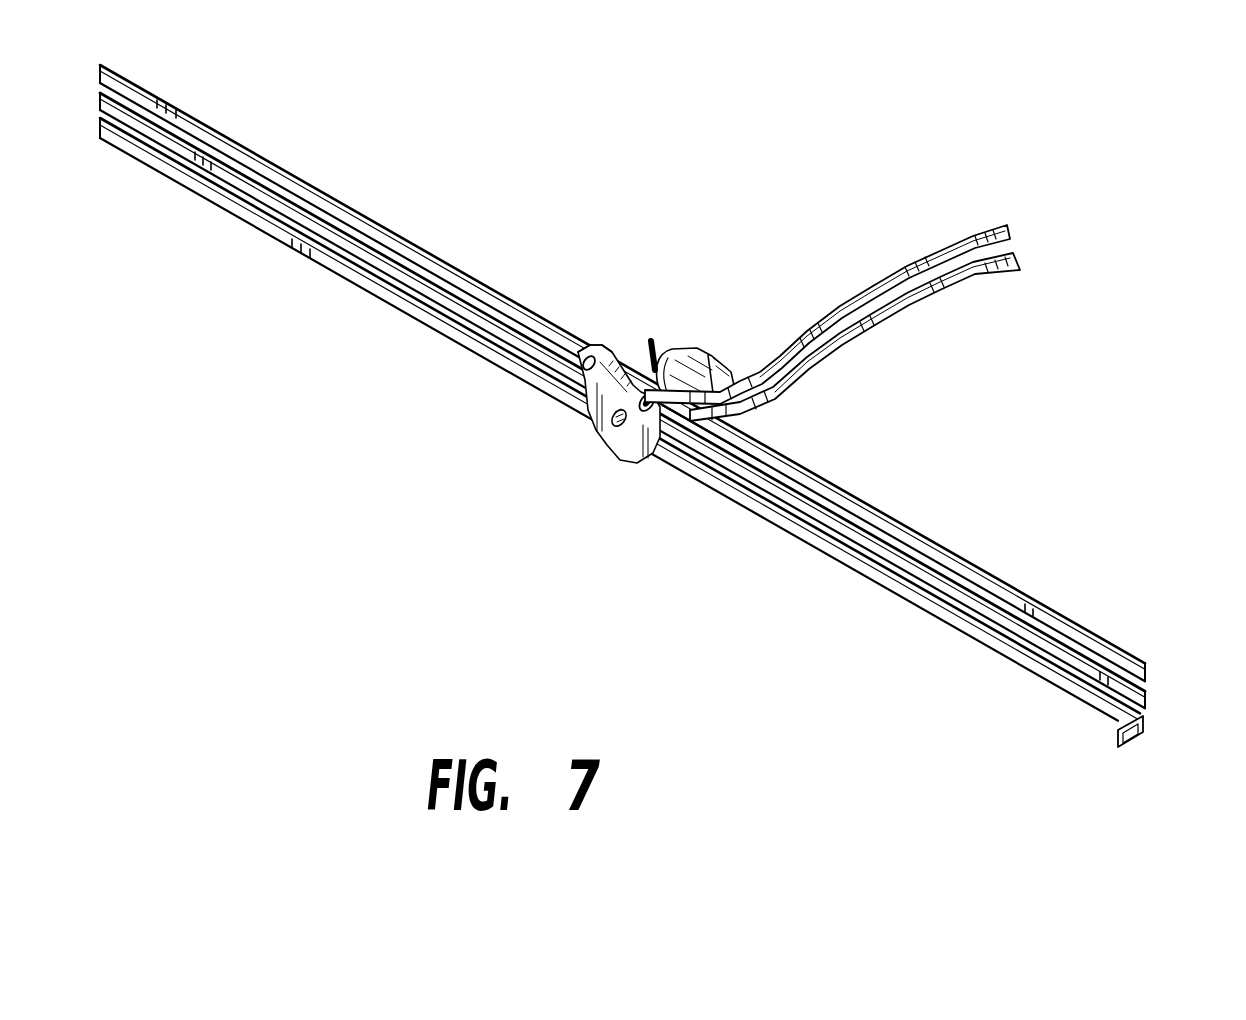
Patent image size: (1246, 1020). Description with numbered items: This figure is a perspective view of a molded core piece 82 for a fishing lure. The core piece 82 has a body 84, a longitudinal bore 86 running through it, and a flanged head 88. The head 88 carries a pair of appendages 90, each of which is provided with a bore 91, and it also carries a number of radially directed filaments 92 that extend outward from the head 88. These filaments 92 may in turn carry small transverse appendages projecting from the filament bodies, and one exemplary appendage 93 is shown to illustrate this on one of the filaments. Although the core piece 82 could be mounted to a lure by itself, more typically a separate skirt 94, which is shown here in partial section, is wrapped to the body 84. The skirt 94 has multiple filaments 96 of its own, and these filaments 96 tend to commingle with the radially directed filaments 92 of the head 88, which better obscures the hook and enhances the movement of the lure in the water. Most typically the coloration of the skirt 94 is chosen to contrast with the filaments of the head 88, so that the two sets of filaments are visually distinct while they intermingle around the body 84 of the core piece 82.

The molded core piece 82 is at (650, 340).
The body 84 is at (683, 347).
The longitudinal bore 86 is at (621, 428).
The flanged head 88 is at (603, 433).
The appendages 90 is at (600, 342).
The bores 91 is at (913, 570).
The filaments 92 is at (642, 404).
The appendage 93 is at (1134, 736).
The skirt 94 is at (728, 360).
The filaments 96 is at (951, 250).